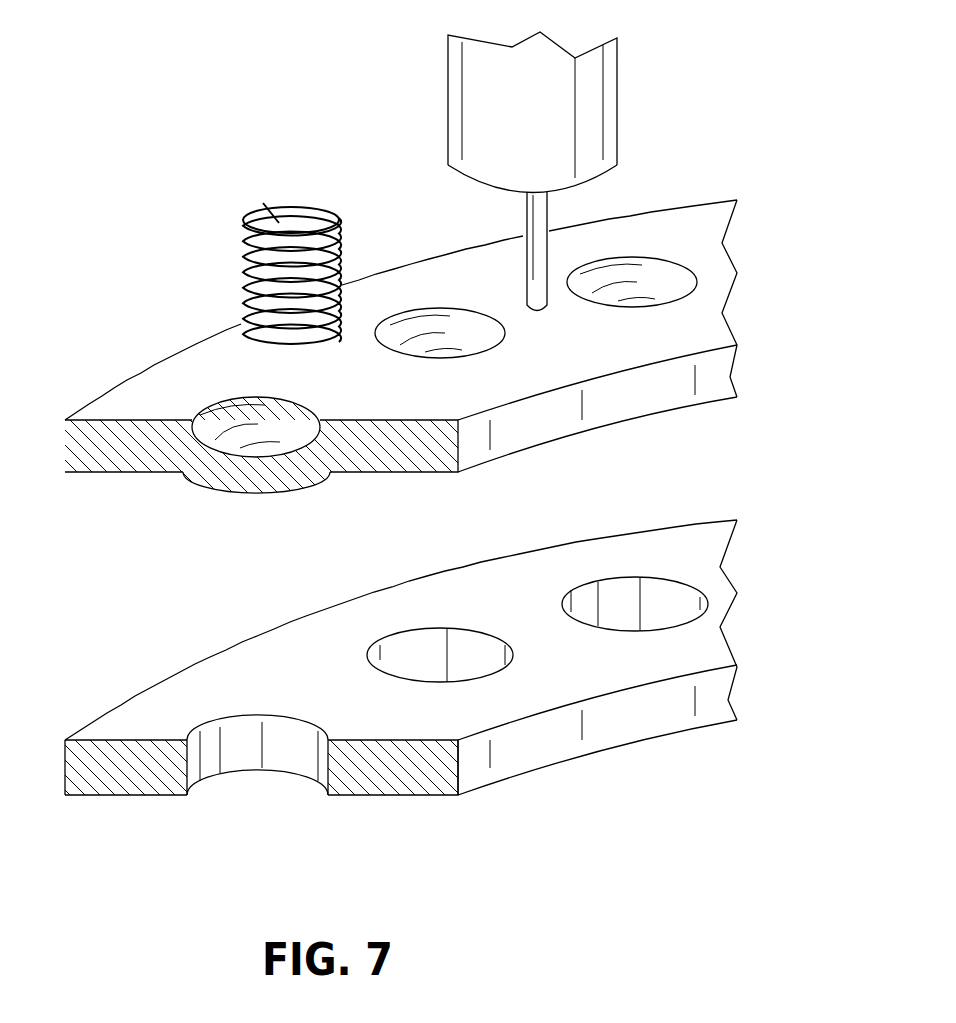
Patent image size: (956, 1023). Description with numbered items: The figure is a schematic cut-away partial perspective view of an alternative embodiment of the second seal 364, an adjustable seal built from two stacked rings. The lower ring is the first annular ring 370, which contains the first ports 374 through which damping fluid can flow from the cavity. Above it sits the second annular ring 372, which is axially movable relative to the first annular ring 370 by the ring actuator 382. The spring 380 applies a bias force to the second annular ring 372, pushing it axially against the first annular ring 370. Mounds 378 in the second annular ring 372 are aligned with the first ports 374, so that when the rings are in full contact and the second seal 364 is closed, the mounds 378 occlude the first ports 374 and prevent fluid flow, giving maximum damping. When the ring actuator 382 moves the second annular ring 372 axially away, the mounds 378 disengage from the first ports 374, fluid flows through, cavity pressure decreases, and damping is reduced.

The second seal 364 is at (126, 830).
The first annular ring 370 is at (703, 647).
The second annular ring 372 is at (138, 397).
The first ports 374 is at (660, 590).
The mounds 378 is at (213, 498).
The spring 380 is at (247, 247).
The ring actuator 382 is at (617, 108).